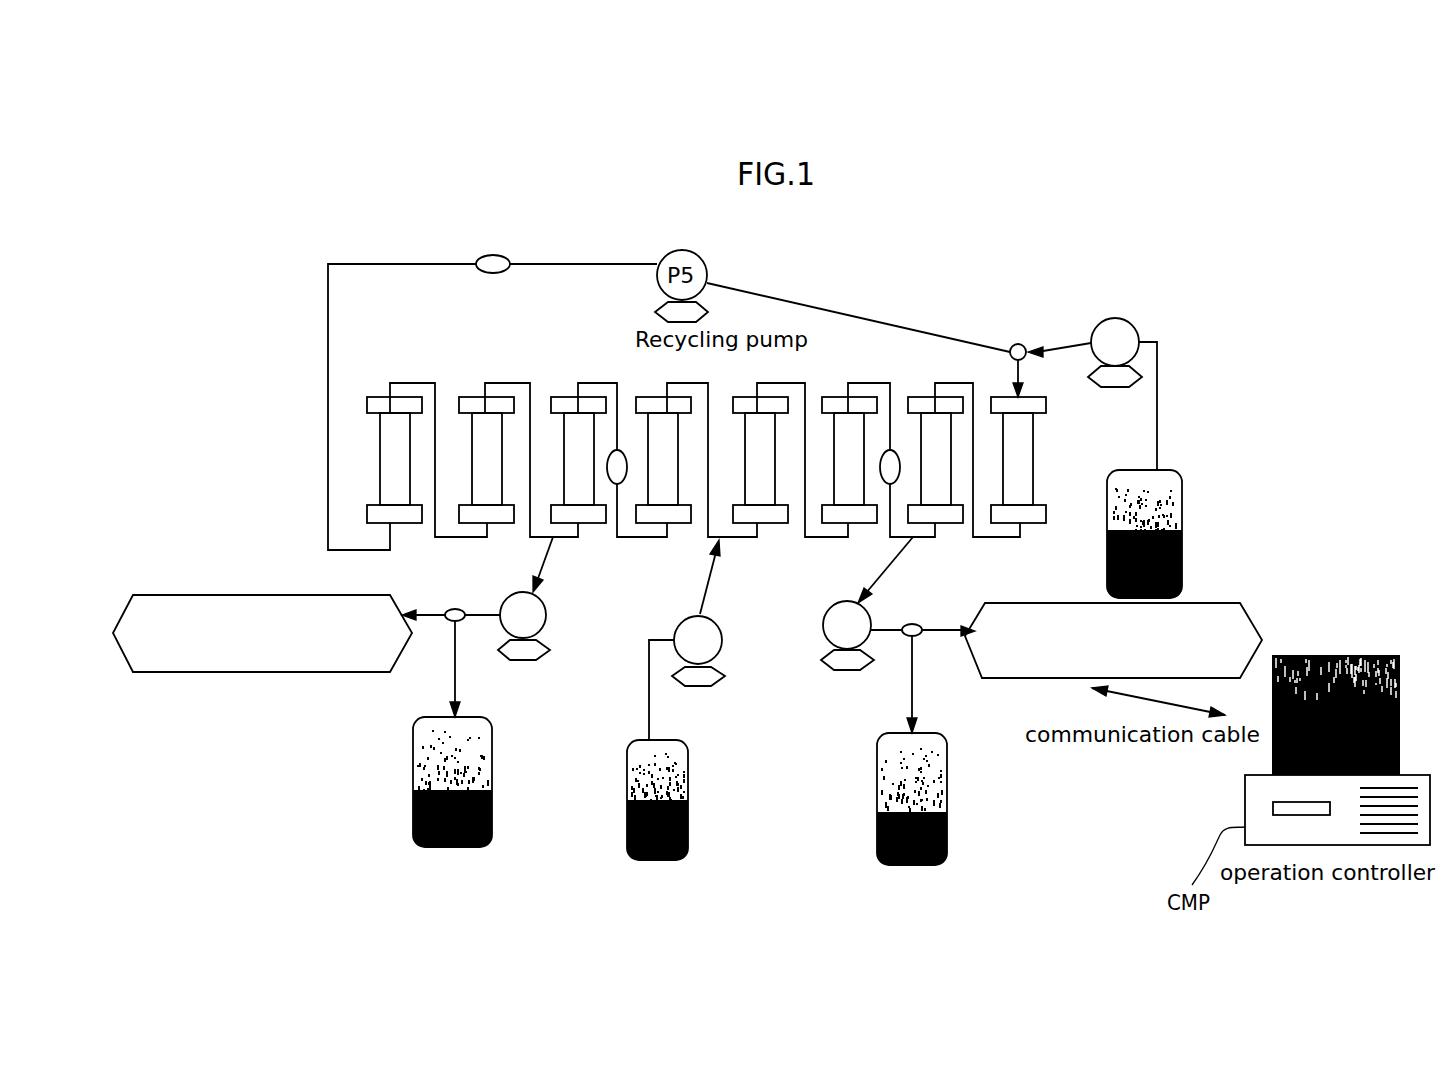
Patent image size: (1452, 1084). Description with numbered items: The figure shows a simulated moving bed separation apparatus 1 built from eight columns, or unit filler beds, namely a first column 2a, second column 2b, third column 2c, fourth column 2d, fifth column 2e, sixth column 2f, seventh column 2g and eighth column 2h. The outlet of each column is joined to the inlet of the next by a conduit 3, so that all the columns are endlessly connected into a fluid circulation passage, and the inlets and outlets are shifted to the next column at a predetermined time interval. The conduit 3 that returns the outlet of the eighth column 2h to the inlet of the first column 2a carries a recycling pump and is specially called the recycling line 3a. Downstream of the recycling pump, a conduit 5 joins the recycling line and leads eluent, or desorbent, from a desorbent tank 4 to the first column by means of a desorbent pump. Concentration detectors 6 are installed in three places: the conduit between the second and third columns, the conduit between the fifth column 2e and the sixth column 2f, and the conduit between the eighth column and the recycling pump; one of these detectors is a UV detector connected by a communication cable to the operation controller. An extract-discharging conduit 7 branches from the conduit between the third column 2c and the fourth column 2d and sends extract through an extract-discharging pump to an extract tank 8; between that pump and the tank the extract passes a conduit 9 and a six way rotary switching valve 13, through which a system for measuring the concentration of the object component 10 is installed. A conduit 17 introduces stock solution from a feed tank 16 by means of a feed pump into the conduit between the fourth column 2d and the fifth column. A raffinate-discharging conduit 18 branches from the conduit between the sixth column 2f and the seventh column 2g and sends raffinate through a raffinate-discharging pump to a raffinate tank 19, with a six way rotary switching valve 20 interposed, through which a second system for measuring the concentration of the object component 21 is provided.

The simulated moving bed separation apparatus 1 is at (1013, 275).
The first column 2a is at (1033, 443).
The second column 2b is at (951, 478).
The third column 2c is at (834, 450).
The fourth column 2d is at (775, 478).
The fifth column 2e is at (648, 445).
The sixth column 2f is at (594, 486).
The seventh column 2g is at (472, 445).
The eighth column 2h is at (380, 437).
The conduit 3 is at (808, 304).
The recycling line 3a is at (892, 312).
The desorbent tank 4 is at (1182, 526).
The conduit 5 is at (1067, 342).
The concentration detector 6 is at (500, 256).
The extract-discharging conduit 7 is at (894, 560).
The extract tank 8 is at (947, 804).
The conduit 9 is at (903, 624).
The system for measuring the concentration of the object component 10 is at (992, 678).
The six way rotary switching valve 13 is at (919, 626).
The feed tank 16 is at (688, 802).
The conduit 17 is at (710, 588).
The raffinate-discharging conduit 18 is at (545, 560).
The raffinate tank 19 is at (492, 780).
The six way rotary switching valve 20 is at (457, 608).
The system for measuring the concentration of the object component 21 is at (358, 672).